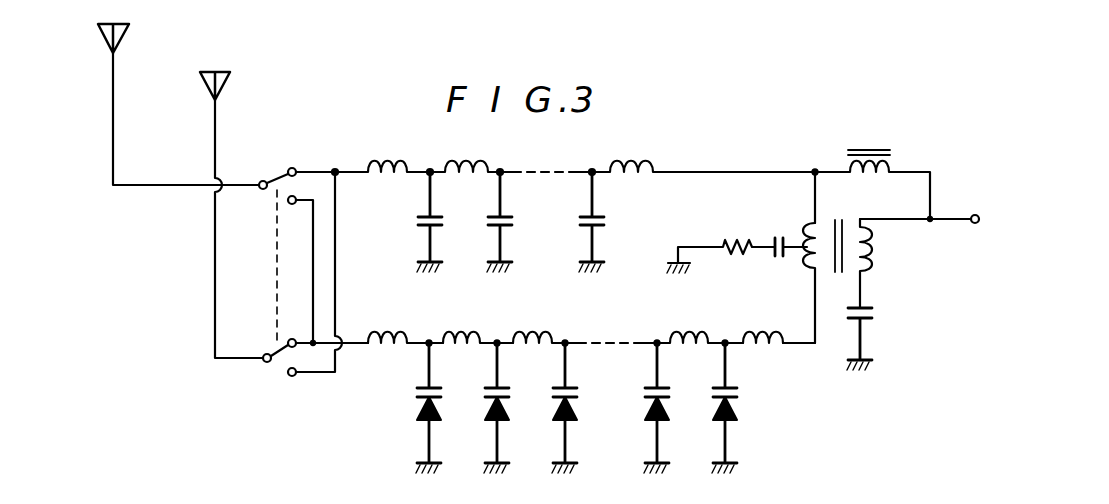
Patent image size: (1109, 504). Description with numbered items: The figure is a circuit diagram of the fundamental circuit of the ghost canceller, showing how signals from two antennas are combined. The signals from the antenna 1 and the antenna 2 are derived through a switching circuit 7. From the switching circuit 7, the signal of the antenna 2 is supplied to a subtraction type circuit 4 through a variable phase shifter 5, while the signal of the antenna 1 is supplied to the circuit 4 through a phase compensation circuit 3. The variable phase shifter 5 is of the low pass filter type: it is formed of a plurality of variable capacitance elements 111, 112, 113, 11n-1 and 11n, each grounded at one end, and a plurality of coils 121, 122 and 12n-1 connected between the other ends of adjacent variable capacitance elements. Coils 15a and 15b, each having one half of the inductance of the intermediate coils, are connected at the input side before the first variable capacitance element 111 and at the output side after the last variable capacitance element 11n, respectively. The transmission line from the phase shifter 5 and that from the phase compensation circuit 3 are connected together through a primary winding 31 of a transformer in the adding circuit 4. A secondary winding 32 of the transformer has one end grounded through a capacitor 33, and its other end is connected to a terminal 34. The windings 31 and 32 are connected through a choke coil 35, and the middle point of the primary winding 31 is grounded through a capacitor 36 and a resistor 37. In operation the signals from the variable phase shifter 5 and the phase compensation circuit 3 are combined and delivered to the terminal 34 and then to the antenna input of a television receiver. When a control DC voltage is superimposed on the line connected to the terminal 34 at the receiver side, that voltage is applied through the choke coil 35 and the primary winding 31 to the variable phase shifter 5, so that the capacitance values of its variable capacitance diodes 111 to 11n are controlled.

The antenna 1 is at (111, 140).
The antenna 2 is at (205, 140).
The switching circuit 7 is at (291, 151).
The phase compensation circuit 3 is at (555, 243).
The subtraction type circuit 4 is at (781, 143).
The variable phase shifter 5 is at (620, 410).
The coil 15a is at (389, 334).
The coil 15b is at (768, 334).
The coil 121 is at (463, 334).
The coil 122 is at (536, 334).
The coil 12n-1 is at (691, 334).
The variable capacitance element 111 is at (422, 426).
The variable capacitance element 112 is at (494, 426).
The variable capacitance element 113 is at (562, 426).
The variable capacitance element 11n-1 is at (648, 424).
The variable capacitance element 11n is at (716, 424).
The primary winding 31 is at (809, 232).
The secondary winding 32 is at (870, 250).
The capacitor 33 is at (874, 313).
The terminal 34 is at (975, 224).
The choke coil 35 is at (876, 148).
The capacitor 36 is at (774, 257).
The resistor 37 is at (732, 238).